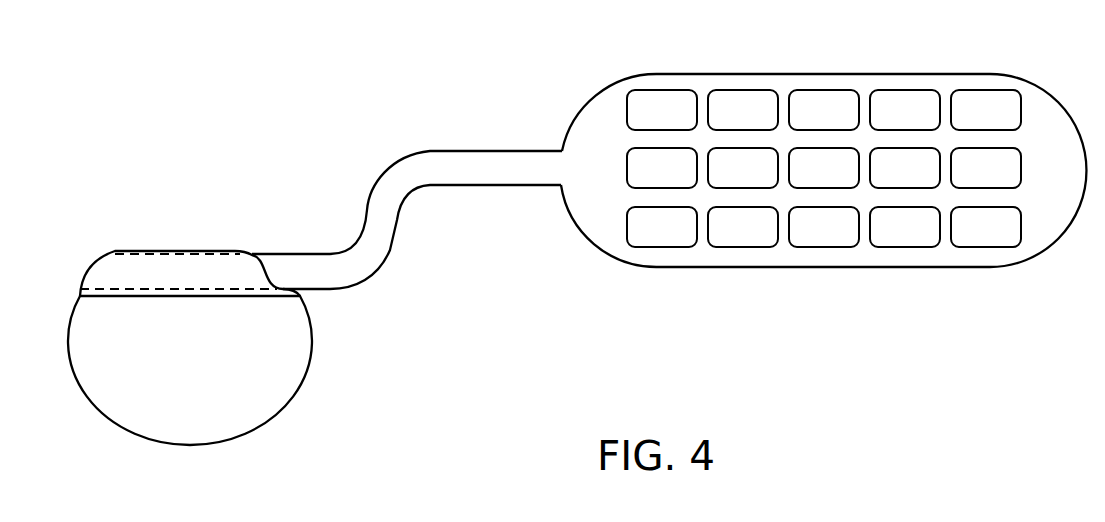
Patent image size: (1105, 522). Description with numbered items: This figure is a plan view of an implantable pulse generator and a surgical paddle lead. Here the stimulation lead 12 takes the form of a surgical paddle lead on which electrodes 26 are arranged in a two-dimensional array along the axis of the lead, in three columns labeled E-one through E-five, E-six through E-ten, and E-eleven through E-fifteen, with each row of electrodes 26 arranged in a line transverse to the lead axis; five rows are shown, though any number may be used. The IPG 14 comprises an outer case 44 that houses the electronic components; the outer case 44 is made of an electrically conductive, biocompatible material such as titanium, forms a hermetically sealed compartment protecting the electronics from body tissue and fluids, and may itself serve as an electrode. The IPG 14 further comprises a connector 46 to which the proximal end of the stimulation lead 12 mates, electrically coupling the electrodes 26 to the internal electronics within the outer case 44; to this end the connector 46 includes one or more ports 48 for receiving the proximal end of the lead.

The stimulation lead 12 is at (384, 152).
The implantable pulse generator 14 is at (327, 242).
The electrodes 26 is at (817, 90).
The outer case 44 is at (312, 337).
The connector 46 is at (193, 251).
The ports 48 is at (150, 251).